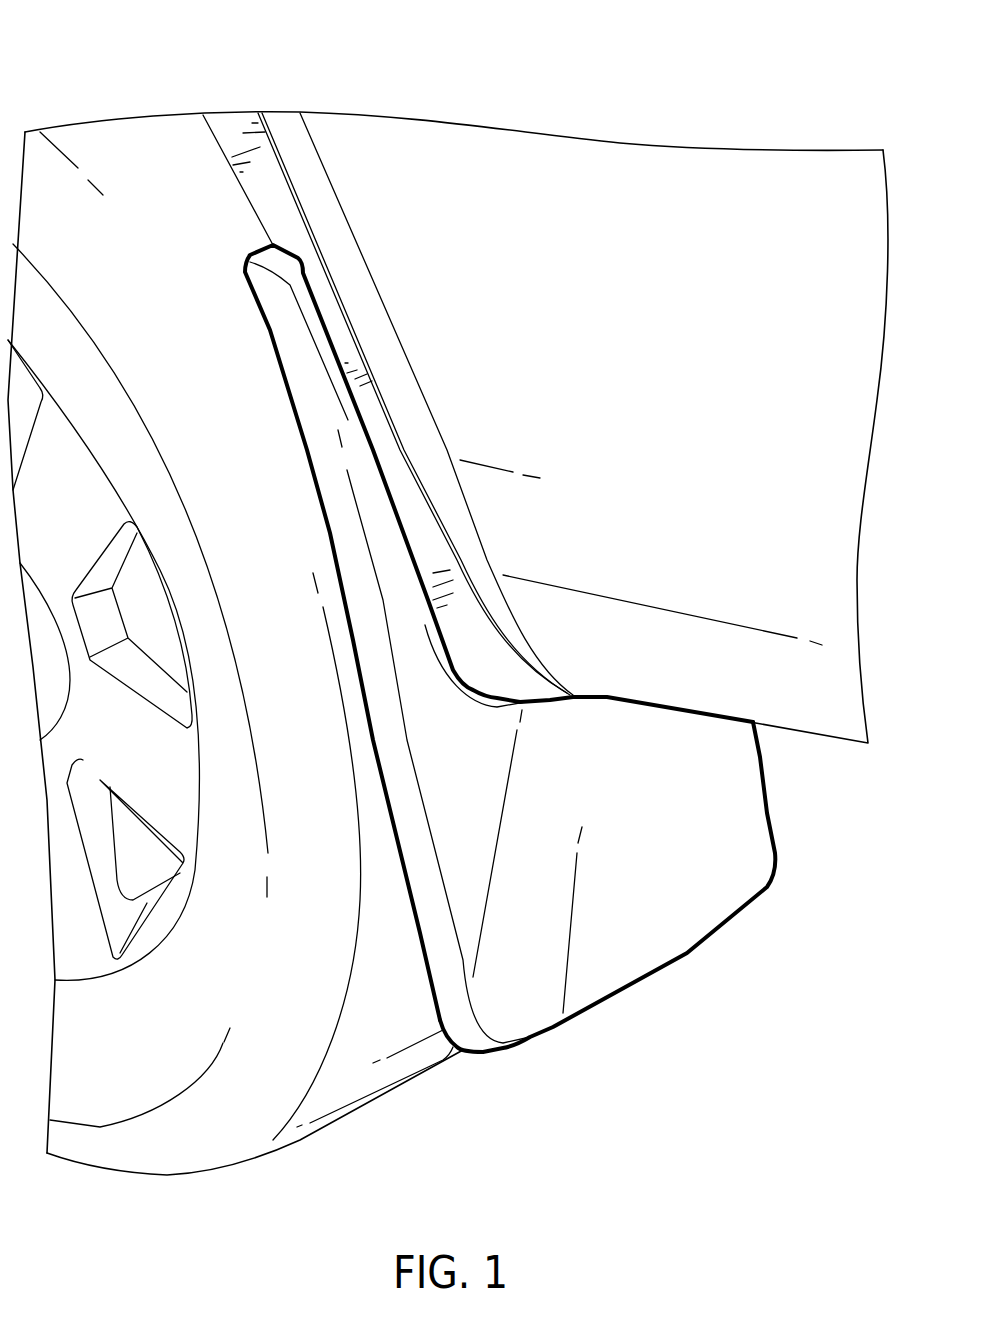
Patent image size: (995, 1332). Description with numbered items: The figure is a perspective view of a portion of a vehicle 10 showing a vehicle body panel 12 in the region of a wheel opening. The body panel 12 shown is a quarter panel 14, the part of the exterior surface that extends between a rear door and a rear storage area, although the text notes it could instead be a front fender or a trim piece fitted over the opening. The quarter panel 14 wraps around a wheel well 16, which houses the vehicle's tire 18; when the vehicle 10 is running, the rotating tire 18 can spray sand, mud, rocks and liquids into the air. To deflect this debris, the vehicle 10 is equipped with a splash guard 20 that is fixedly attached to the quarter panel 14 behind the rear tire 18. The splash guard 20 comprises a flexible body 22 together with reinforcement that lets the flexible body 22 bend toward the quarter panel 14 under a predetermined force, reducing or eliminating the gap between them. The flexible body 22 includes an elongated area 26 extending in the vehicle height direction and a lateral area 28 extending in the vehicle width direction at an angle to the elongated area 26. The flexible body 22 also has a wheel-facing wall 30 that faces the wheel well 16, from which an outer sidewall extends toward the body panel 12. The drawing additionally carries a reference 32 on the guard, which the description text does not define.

The vehicle 10 is at (573, 37).
The vehicle body panel 12 is at (661, 141).
The quarter panel 14 is at (280, 213).
The wheel well 16 is at (416, 1118).
The tire 18 is at (90, 980).
The splash guard 20 is at (225, 248).
The flexible body 22 is at (773, 830).
The elongated area 26 is at (338, 517).
The lateral area 28 is at (550, 700).
The wheel-facing wall 30 is at (697, 790).
The inner edge 32 is at (400, 738).